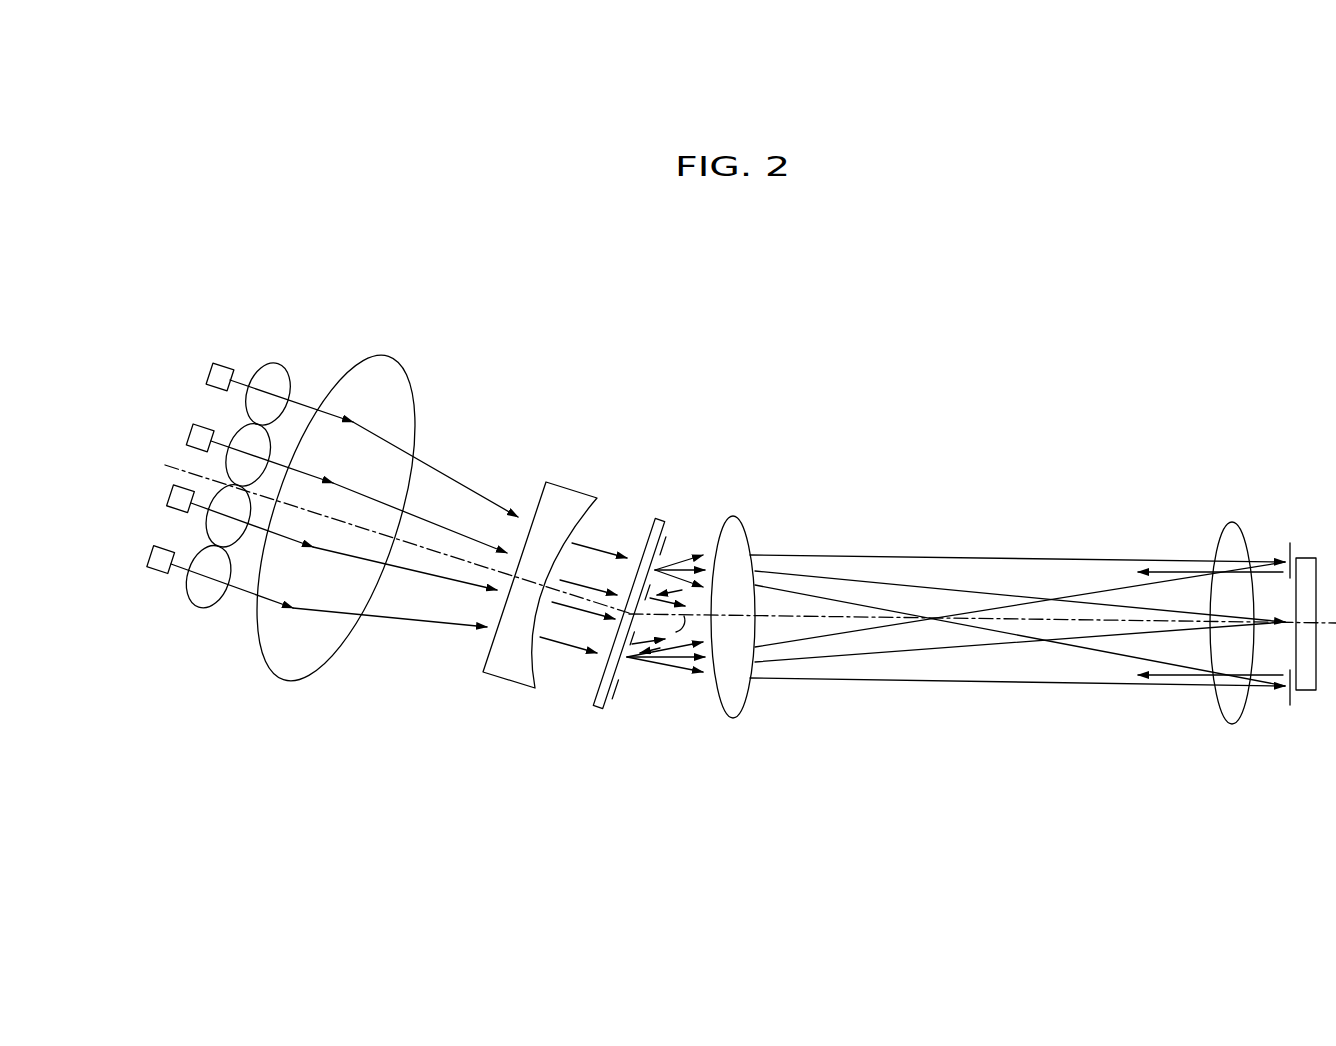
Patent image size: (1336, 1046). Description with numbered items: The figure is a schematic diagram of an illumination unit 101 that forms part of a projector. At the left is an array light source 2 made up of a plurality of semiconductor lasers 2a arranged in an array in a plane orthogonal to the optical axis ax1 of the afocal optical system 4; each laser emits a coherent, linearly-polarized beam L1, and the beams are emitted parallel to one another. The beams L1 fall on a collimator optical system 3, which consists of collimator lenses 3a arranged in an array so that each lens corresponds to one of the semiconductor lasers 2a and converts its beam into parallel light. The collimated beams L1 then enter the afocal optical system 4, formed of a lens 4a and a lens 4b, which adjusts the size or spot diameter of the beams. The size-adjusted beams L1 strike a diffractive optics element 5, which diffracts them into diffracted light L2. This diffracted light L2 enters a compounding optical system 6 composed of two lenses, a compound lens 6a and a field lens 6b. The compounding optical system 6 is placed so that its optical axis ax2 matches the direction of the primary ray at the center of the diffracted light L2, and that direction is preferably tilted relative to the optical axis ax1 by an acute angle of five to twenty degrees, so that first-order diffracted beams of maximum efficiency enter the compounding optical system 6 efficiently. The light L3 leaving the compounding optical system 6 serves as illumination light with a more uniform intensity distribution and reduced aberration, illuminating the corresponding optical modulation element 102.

The illumination unit 101 is at (168, 280).
The array light source 2 is at (224, 360).
The semiconductor laser 2a is at (207, 378).
The collimator optical system 3 is at (296, 368).
The collimator lens 3a is at (276, 366).
The beam L1 is at (243, 386).
The afocal optical system 4 is at (620, 420).
The lens 4a is at (388, 372).
The lens 4b is at (566, 499).
The optical axis ax1 is at (415, 546).
The diffractive optics element 5 is at (647, 537).
The diffracted light L2 is at (683, 566).
The compounding optical system 6 is at (1256, 449).
The compound lens 6a is at (735, 528).
The field lens 6b is at (1235, 532).
The optical axis ax2 is at (841, 619).
The light beam from relay lens L3 is at (1021, 681).
The optical modulation element 102 is at (1304, 691).